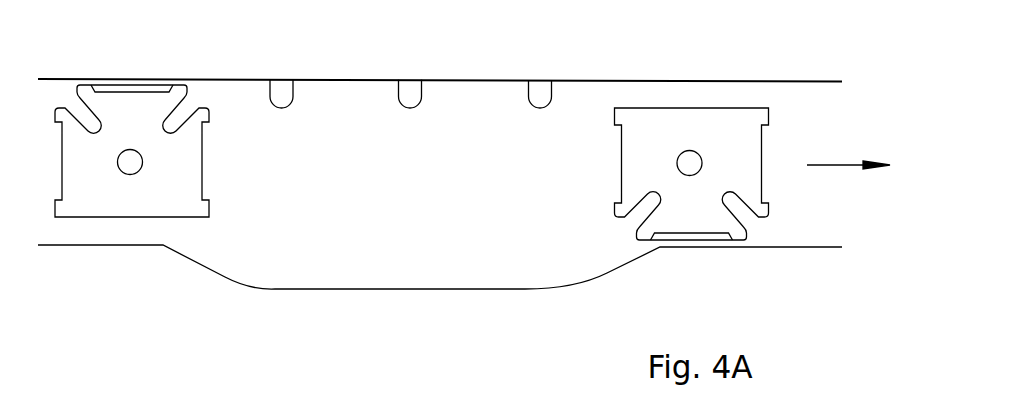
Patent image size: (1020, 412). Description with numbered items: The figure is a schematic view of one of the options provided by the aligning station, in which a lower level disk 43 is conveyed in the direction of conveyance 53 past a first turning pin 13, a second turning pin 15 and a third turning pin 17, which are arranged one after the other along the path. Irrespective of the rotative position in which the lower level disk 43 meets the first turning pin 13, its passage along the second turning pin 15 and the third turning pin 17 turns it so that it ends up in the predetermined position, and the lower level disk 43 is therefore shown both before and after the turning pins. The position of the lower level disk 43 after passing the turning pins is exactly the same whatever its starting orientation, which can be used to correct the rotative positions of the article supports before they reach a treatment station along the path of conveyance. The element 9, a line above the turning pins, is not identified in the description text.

The guide rail 9 is at (790, 81).
The first retaining recess 13 is at (282, 88).
The second retaining recess 15 is at (410, 88).
The third retaining recess 17 is at (540, 88).
The connecting bracket 43 is at (130, 193).
The direction of movement 53 is at (838, 165).